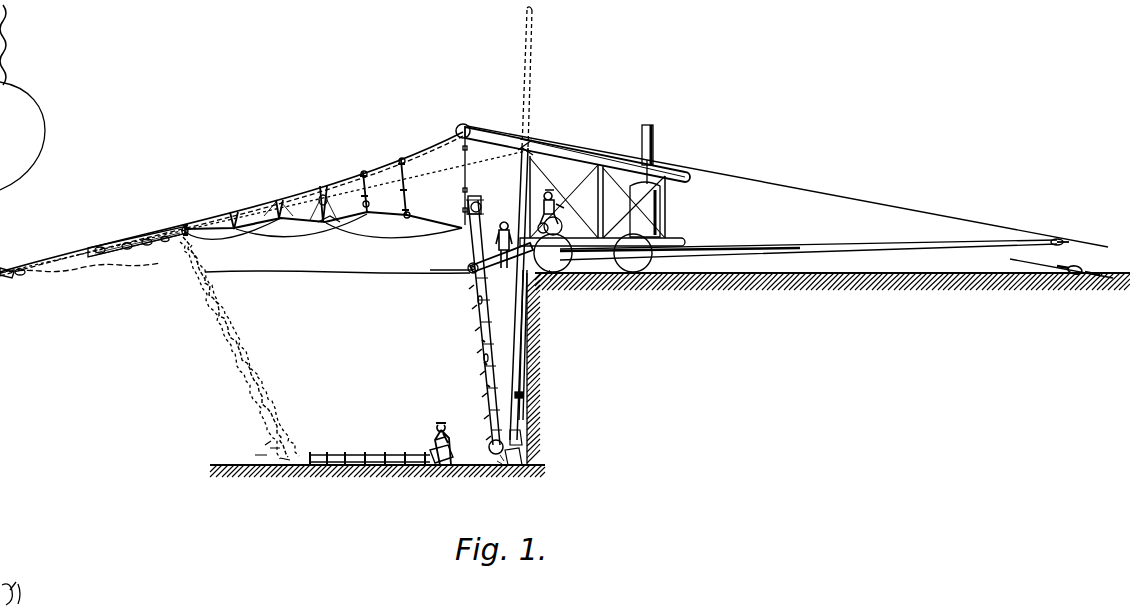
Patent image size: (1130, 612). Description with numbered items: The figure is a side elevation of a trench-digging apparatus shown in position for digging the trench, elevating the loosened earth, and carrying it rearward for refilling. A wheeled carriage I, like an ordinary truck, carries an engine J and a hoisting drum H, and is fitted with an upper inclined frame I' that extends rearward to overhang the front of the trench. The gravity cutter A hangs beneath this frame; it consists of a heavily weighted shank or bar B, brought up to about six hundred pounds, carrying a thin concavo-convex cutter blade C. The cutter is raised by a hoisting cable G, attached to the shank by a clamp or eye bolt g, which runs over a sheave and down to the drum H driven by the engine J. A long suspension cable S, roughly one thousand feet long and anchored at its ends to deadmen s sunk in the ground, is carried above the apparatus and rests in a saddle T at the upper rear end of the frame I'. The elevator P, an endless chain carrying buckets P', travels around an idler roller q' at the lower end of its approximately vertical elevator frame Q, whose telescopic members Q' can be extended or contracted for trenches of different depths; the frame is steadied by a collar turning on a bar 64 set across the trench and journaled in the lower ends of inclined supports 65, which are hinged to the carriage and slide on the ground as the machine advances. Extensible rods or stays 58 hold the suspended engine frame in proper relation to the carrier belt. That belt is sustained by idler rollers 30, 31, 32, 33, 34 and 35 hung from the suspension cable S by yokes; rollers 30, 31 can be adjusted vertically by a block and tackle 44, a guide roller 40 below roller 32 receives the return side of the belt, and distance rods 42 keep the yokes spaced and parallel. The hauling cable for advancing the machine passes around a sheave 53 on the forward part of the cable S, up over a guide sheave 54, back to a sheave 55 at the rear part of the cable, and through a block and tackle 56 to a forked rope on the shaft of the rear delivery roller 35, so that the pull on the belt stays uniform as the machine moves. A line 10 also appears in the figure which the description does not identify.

The inclined cable 10 is at (466, 160).
The idler roller 30 is at (412, 214).
The idler roller 31 is at (376, 210).
The idler roller 32 is at (330, 198).
The idler roller 33 is at (284, 208).
The idler roller 34 is at (238, 220).
The rear delivery roller 35 is at (188, 223).
The guide roller 40 is at (332, 222).
The distance rods 42 is at (259, 231).
The block and tackle 44 is at (380, 184).
The sheave 53 is at (1060, 240).
The guide sheave 54 is at (534, 148).
The sheave 55 is at (105, 250).
The block and tackle 56 is at (163, 243).
The extensible rods 58 is at (486, 206).
The shaft or bar 64 is at (479, 257).
The inclined supports 65 is at (490, 272).
The cutter A is at (525, 360).
The weighted shank or bar B is at (384, 232).
The cutter blade C is at (522, 464).
The hoisting cable G is at (528, 322).
The hoisting drum H is at (522, 218).
The wheeled carriage I is at (602, 202).
The upper inclined frame I' is at (577, 152).
The engine J is at (563, 210).
The elevator P is at (473, 368).
The buckets P' is at (468, 370).
The elevator frame Q is at (474, 327).
The telescopic members Q' is at (465, 361).
The suspension cable S is at (826, 192).
The saddle T is at (903, 248).
The clamp or eye bolt g is at (486, 189).
The idler roller q' is at (387, 473).
The deadmen s is at (1123, 270).